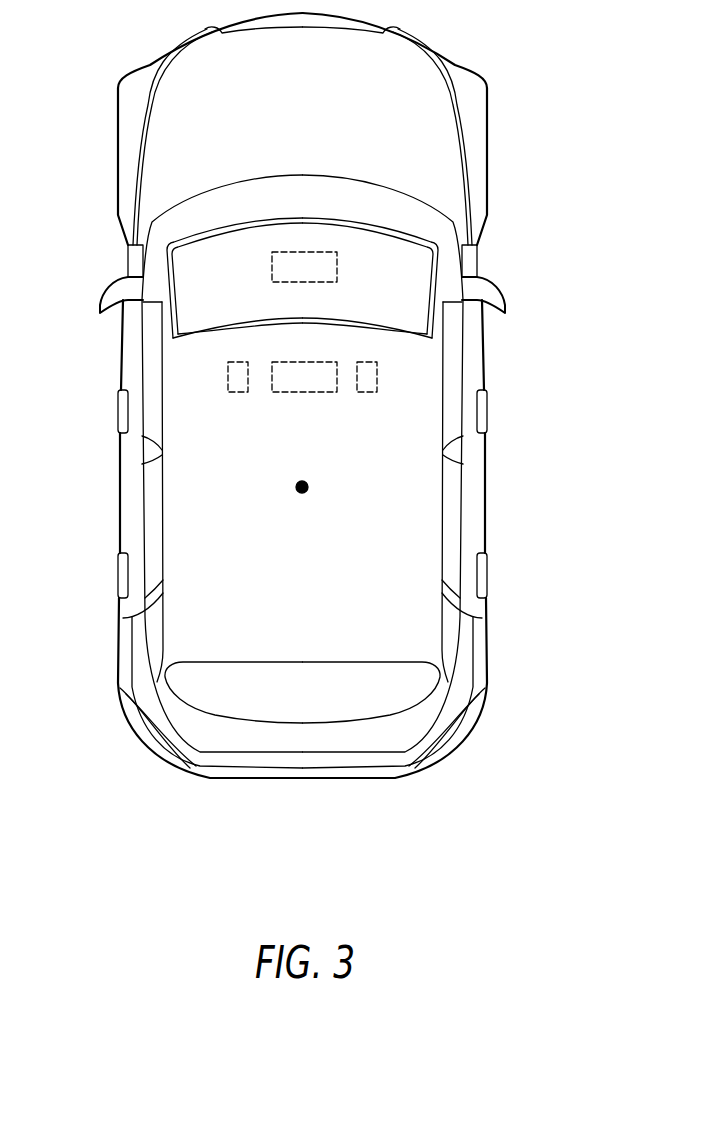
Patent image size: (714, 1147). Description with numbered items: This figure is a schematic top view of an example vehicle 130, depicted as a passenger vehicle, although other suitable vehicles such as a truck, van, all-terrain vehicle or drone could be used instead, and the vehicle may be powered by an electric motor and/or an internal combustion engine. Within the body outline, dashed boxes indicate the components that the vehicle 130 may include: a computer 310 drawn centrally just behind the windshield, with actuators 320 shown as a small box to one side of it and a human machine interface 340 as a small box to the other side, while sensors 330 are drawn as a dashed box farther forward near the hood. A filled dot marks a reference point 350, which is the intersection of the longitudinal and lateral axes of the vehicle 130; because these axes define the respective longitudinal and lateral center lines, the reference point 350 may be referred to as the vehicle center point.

The vehicle 130 is at (488, 648).
The computer 310 is at (275, 360).
The actuator 320 is at (228, 382).
The sensors 330 is at (337, 258).
The human machine interface 340 is at (377, 379).
The reference point 350 is at (292, 491).